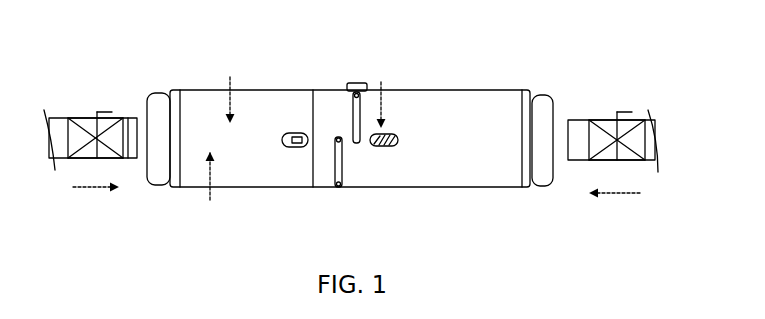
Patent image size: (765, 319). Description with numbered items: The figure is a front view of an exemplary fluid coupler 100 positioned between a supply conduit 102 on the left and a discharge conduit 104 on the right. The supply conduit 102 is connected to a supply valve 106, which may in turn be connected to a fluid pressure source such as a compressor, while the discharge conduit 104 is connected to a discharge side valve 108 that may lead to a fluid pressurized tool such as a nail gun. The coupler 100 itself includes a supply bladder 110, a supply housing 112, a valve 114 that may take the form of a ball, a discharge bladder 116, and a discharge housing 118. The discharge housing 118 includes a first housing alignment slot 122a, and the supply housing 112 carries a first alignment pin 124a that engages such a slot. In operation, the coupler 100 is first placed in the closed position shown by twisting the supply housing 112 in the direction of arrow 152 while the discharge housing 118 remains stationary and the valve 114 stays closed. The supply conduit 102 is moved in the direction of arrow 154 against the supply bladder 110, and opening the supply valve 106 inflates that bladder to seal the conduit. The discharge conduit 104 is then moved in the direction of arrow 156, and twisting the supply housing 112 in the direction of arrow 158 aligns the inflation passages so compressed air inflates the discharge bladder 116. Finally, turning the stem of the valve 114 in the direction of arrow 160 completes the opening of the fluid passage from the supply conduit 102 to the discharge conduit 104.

The fluid coupler 100 is at (488, 90).
The supply conduit 102 is at (127, 117).
The discharge conduit 104 is at (575, 119).
The supply valve 106 is at (77, 117).
The discharge side valve 108 is at (605, 112).
The supply bladder 110 is at (153, 186).
The supply housing 112 is at (268, 188).
The valve 114 is at (362, 84).
The discharge bladder 116 is at (537, 187).
The discharge housing 118 is at (422, 188).
The first housing alignment slot 122a is at (342, 178).
The first alignment pin 124a is at (342, 142).
The arrow 152 is at (210, 196).
The arrow 154 is at (80, 191).
The arrow 156 is at (617, 197).
The arrow 158 is at (230, 78).
The arrow 160 is at (383, 90).